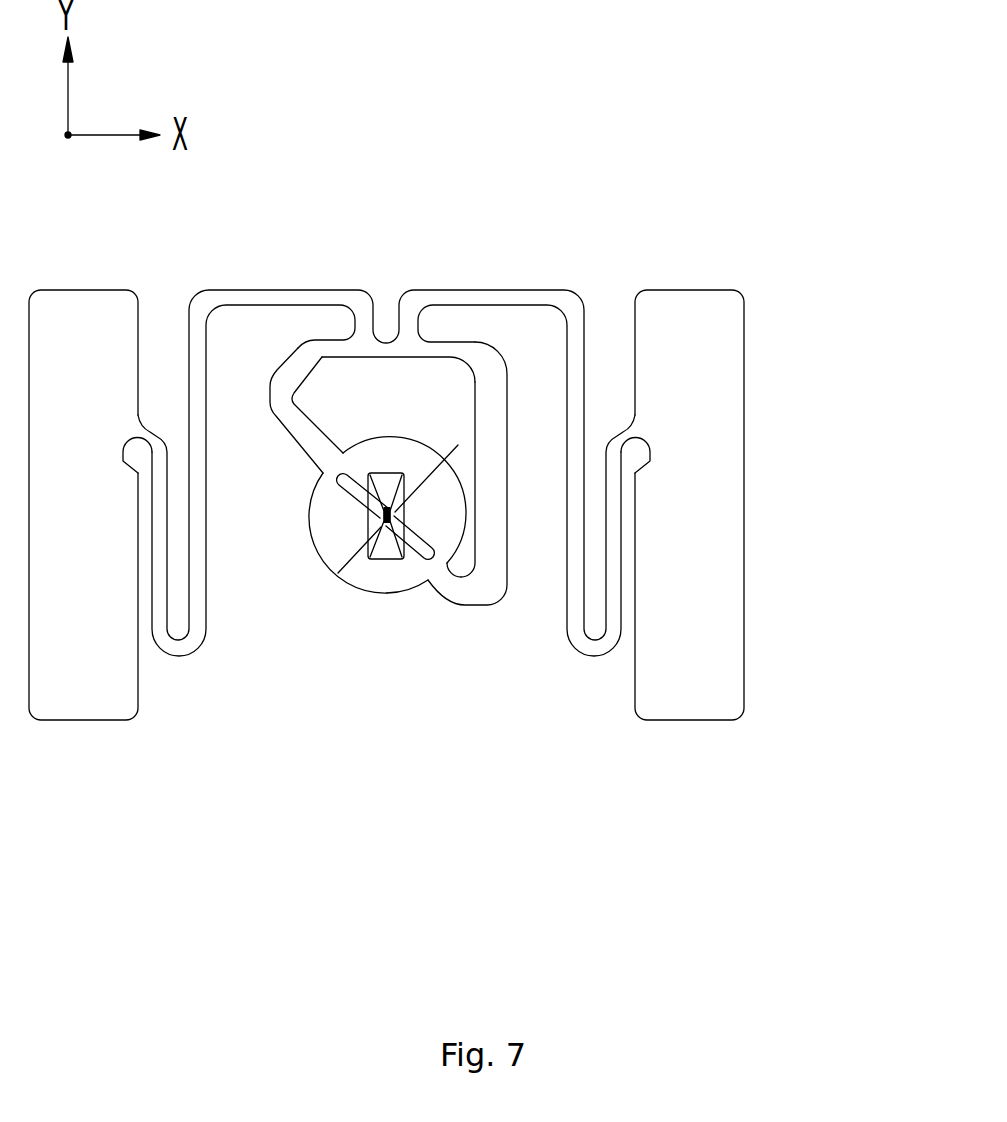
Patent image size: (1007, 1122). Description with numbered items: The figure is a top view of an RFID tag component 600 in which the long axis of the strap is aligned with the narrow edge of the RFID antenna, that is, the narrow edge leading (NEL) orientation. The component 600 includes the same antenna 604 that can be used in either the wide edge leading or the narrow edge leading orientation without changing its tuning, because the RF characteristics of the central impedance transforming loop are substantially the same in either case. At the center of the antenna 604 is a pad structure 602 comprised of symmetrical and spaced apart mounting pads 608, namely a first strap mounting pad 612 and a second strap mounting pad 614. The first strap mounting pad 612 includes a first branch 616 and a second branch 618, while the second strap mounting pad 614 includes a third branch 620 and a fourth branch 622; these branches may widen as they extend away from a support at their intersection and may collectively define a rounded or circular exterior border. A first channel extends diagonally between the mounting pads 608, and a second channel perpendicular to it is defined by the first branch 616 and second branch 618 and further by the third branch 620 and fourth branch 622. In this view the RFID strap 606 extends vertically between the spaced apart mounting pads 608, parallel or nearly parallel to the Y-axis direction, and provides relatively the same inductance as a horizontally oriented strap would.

The RFID tag component 600 is at (737, 262).
The pad structure 602 is at (705, 601).
The antenna 604 is at (297, 430).
The RFID strap 606 is at (383, 540).
The mounting pads 608 is at (388, 455).
The first strap mounting pad 612 is at (350, 464).
The second strap mounting pad 614 is at (437, 572).
The first branch 616 is at (323, 512).
The second branch 618 is at (460, 438).
The third branch 620 is at (467, 505).
The fourth branch 622 is at (362, 578).